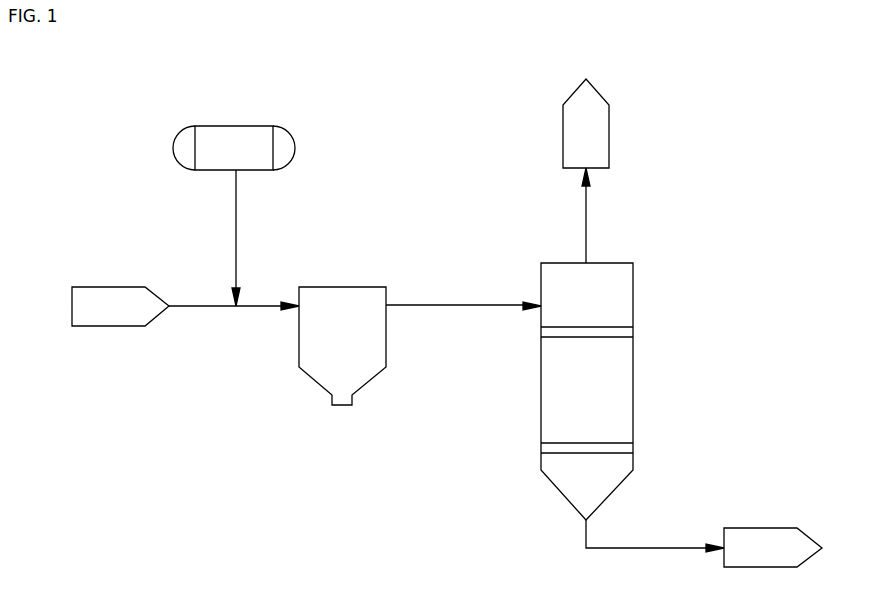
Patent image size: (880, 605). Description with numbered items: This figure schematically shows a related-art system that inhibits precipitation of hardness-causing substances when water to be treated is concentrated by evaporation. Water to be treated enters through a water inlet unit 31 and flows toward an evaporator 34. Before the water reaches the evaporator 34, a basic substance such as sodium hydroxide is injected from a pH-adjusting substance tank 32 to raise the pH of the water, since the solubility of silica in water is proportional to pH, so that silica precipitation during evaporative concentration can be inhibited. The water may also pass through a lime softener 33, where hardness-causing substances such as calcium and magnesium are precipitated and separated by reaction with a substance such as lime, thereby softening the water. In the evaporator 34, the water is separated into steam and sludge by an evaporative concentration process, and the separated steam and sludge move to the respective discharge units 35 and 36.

The water inlet unit 31 is at (102, 286).
The pH-adjusting substance tank 32 is at (234, 125).
The lime softener 33 is at (374, 378).
The evaporator 34 is at (633, 300).
The discharge unit 35 is at (609, 128).
The discharge unit 36 is at (760, 527).